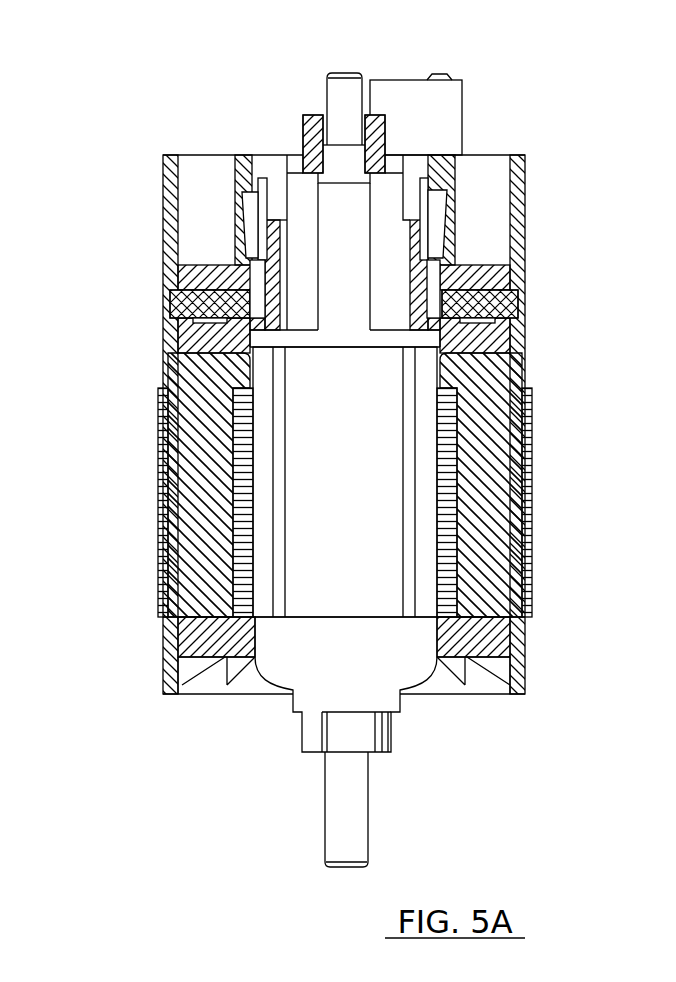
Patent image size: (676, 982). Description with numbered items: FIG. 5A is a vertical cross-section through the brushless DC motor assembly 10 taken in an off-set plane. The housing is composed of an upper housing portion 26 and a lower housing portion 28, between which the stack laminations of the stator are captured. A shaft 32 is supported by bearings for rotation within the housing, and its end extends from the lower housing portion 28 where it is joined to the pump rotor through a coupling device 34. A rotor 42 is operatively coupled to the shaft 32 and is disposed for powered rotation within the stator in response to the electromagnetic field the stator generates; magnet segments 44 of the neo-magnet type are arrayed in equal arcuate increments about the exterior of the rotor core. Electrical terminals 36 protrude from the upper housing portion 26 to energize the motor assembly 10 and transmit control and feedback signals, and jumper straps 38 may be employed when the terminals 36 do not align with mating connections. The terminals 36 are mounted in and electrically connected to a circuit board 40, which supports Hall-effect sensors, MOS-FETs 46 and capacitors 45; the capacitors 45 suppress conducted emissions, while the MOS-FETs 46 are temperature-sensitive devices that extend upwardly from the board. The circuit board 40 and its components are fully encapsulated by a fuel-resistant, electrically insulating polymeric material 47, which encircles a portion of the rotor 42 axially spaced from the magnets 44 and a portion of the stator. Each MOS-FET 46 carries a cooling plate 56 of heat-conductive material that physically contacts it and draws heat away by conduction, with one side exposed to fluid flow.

The motor assembly 10 is at (350, 449).
The upper housing portion 26 is at (192, 178).
The lower housing portion 28 is at (530, 637).
The shaft 32 is at (323, 800).
The coupling device 34 is at (395, 728).
The electrical terminals 36 is at (447, 74).
The jumper straps 38 is at (442, 108).
The circuit board 40 is at (200, 303).
The rotor 42 is at (287, 417).
The magnet segments 44 is at (315, 518).
The capacitors 45 is at (193, 320).
The MOS-FETs 46 is at (248, 228).
The polymeric material 47 is at (247, 183).
The cooling plate 56 is at (267, 183).